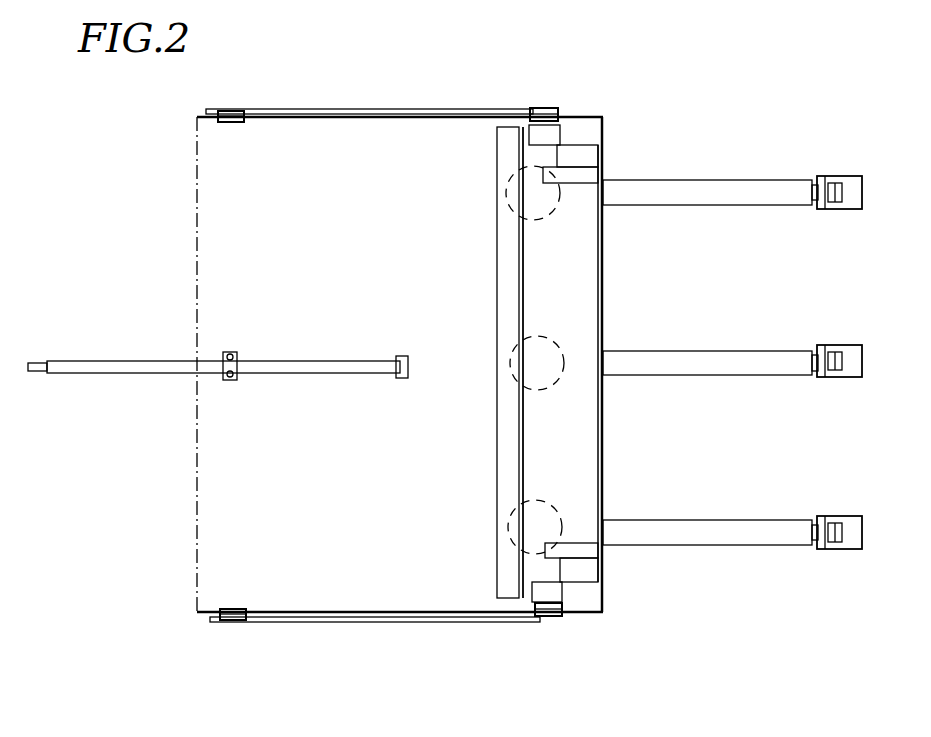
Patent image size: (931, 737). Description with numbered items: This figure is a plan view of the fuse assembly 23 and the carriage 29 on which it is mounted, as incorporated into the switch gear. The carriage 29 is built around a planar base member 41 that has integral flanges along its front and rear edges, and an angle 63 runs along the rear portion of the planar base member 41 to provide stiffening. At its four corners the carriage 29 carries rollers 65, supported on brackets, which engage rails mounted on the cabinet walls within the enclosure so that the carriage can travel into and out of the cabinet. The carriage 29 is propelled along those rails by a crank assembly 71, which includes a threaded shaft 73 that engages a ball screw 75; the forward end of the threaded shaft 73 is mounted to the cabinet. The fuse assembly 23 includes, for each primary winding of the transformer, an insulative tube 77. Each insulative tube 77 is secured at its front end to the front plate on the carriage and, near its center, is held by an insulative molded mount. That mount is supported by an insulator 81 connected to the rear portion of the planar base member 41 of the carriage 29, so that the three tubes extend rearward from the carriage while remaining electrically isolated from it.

The fuse assembly 23 is at (732, 317).
The carriage 29 is at (431, 100).
The planar base member 41 is at (203, 205).
The angle 63 is at (500, 274).
The rollers 65 is at (232, 112).
The crank assembly 71 is at (218, 341).
The threaded shaft 73 is at (77, 373).
The ball screw 75 is at (238, 379).
The insulative tube 77 is at (767, 179).
The insulator 81 is at (560, 380).